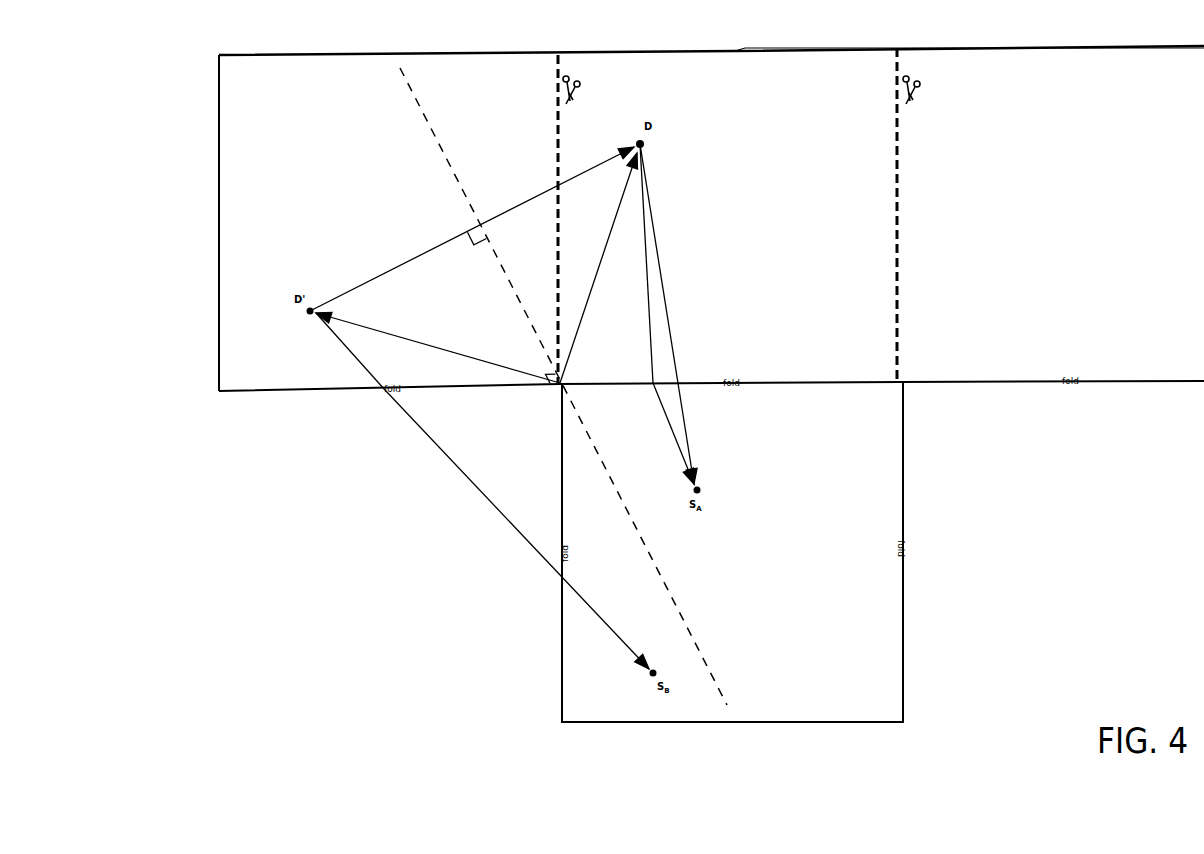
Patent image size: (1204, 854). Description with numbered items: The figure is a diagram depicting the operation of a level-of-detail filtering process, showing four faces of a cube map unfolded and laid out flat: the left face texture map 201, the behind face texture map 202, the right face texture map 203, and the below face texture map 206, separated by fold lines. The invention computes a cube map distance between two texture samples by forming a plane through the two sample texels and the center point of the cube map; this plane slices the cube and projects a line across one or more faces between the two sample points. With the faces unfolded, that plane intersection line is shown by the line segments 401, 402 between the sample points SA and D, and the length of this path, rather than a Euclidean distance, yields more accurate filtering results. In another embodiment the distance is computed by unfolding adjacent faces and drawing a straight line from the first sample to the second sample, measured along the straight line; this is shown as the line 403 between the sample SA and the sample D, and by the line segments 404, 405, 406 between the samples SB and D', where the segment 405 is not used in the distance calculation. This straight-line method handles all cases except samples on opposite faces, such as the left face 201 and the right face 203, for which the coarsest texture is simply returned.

The texture map (left face) 201 is at (388, 221).
The texture map (behind face) 202 is at (727, 216).
The texture map (right face) 203 is at (1050, 214).
The texture map (below face) 206 is at (732, 552).
The line segment 401 is at (599, 268).
The line segment 402 is at (670, 433).
The line 403 is at (678, 325).
The line segment 404 is at (358, 349).
The line segment 405 is at (479, 496).
The line segment 406 is at (610, 635).